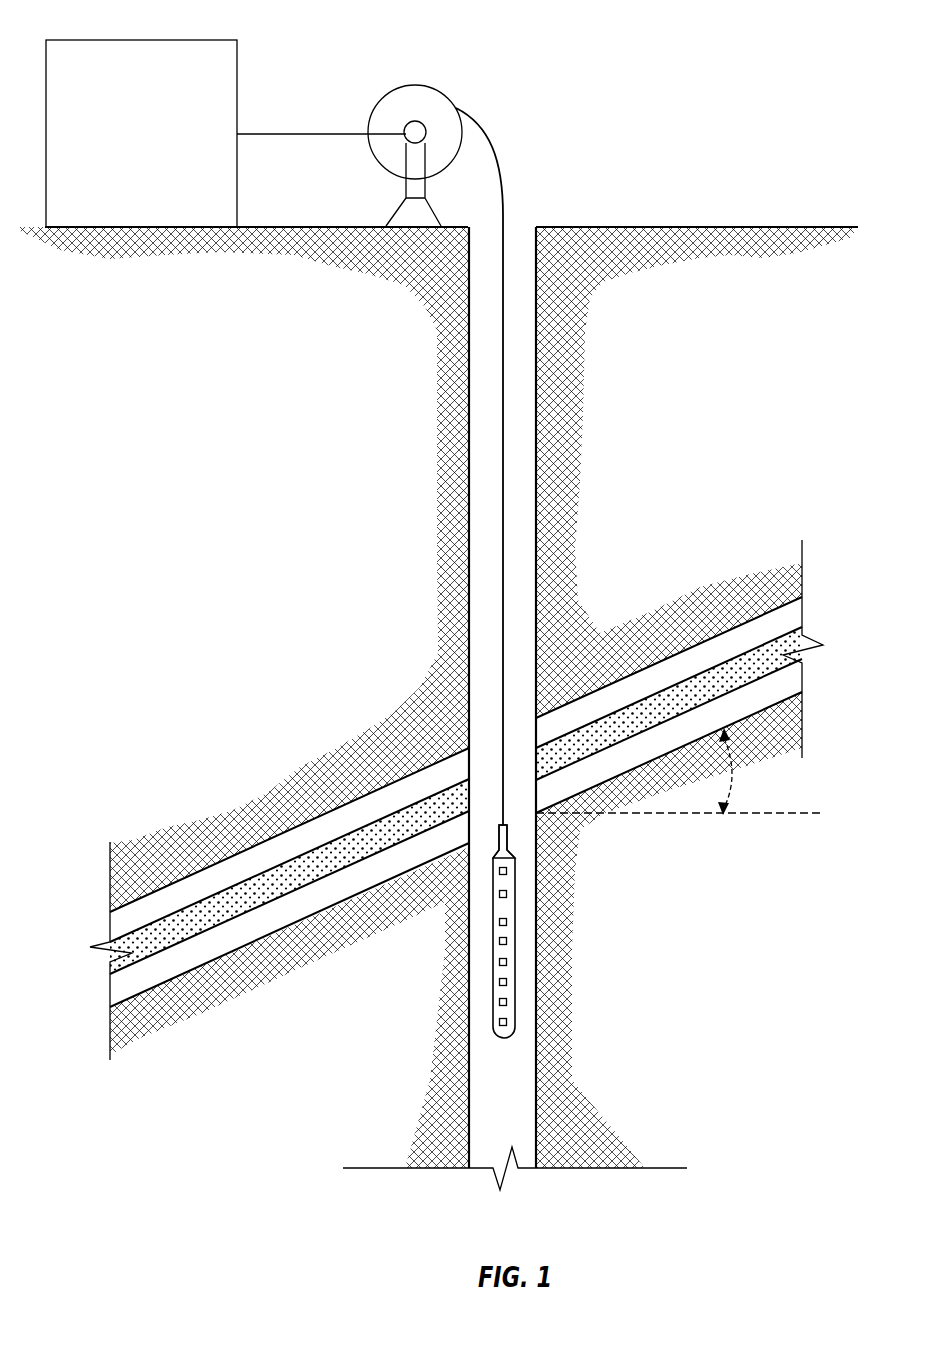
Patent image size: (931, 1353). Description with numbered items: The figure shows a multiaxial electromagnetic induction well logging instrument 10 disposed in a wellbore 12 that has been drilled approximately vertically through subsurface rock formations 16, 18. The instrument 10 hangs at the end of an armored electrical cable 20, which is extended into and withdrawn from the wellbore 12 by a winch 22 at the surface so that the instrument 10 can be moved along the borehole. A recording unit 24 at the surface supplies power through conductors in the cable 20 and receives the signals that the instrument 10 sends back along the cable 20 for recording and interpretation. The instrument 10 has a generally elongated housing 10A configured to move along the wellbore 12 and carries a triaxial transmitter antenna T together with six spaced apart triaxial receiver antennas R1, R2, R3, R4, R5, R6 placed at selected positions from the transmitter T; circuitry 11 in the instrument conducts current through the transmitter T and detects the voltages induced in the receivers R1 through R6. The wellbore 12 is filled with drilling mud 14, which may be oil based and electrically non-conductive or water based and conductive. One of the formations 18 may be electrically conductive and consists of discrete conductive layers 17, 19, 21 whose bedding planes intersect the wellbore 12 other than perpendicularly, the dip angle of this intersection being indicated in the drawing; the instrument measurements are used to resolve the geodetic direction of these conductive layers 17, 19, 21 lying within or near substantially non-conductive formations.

The recording unit 24 is at (128, 40).
The winch 22 is at (430, 98).
The armored electrical cable 20 is at (499, 163).
The subsurface rock formation 16 is at (657, 265).
The wellbore 12 is at (468, 627).
The discrete layer 17 is at (601, 684).
The discrete layer 19 is at (670, 693).
The discrete layer 21 is at (737, 700).
The electrically conductive rock formation 18 is at (172, 1002).
The drilling mud 14 is at (519, 1104).
The multiaxial induction well logging instrument 10 is at (493, 895).
The elongated housing 10A is at (493, 860).
The circuitry 11 is at (507, 870).
The triaxial transmitter antenna T is at (507, 895).
The triaxial receiver antenna R1 is at (507, 922).
The triaxial receiver antenna R2 is at (507, 941).
The triaxial receiver antenna R3 is at (507, 962).
The triaxial receiver antenna R4 is at (507, 982).
The triaxial receiver antenna R5 is at (499, 1002).
The triaxial receiver antenna R6 is at (499, 1022).